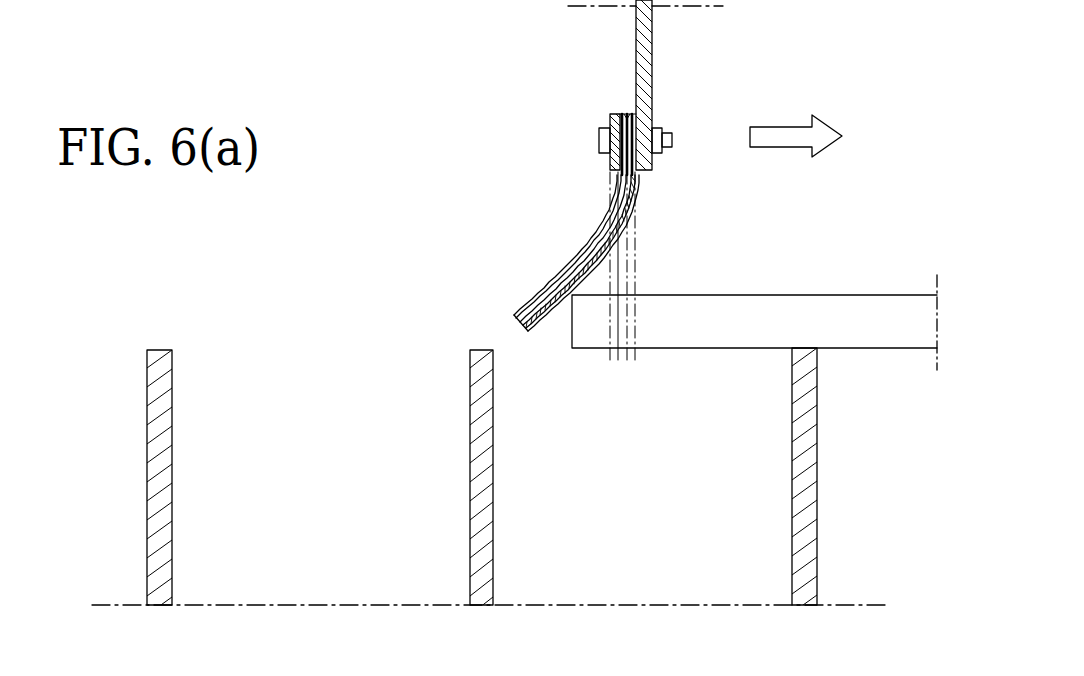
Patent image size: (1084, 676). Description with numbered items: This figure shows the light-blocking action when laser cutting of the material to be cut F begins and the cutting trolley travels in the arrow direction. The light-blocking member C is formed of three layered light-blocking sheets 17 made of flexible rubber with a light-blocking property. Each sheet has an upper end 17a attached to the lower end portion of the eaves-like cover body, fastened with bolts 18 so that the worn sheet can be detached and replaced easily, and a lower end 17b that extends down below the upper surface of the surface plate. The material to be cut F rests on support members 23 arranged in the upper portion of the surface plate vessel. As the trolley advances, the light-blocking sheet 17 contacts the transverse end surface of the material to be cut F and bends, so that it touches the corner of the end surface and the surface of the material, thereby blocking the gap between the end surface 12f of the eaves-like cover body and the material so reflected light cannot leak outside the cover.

The end surface 12f is at (648, 62).
The light-blocking sheet 17 is at (600, 220).
The upper end 17a is at (627, 112).
The lower end 17b is at (520, 332).
The bolt 18 is at (599, 145).
The support member 23 is at (483, 460).
The material to be cut F is at (843, 320).
The light-blocking member C is at (445, 195).